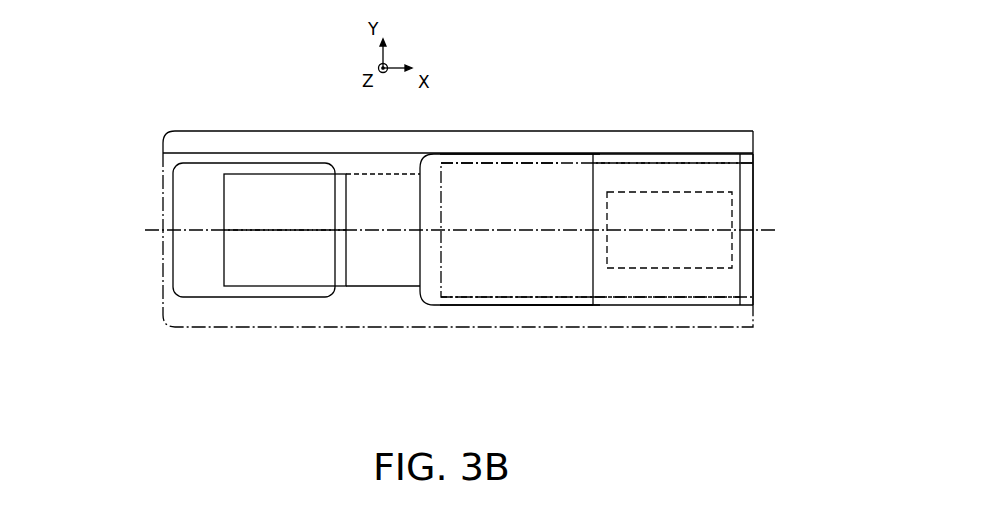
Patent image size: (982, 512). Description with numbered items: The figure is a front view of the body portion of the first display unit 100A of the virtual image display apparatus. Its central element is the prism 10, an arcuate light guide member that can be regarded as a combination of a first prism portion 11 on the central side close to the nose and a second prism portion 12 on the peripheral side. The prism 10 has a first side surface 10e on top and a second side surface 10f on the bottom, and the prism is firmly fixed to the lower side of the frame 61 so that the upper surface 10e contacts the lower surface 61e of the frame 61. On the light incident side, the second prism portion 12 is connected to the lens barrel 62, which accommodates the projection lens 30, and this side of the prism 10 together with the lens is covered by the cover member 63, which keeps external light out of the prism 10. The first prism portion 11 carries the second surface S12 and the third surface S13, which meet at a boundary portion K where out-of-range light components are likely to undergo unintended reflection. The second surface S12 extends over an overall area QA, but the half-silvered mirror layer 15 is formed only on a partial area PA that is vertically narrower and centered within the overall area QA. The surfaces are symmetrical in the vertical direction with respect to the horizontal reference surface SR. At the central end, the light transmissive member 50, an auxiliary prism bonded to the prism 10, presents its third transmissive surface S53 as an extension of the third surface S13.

The first display unit 100A is at (172, 85).
The cover member 63 is at (277, 327).
The lens barrel 62 is at (240, 185).
The projection lens 30 is at (285, 183).
The reference surface SR is at (310, 230).
The second prism portion 12 is at (340, 273).
The prism 10 is at (468, 192).
The first side surface 10e is at (502, 154).
The second side surface 10f is at (572, 305).
The frame 61 is at (587, 150).
The lower surface 61e is at (540, 158).
The boundary portion K is at (596, 285).
The second surface S12 is at (628, 190).
The half-silvered mirror layer 15 is at (671, 192).
The partial area PA is at (669, 235).
The third surface S13 is at (491, 283).
The first prism portion 11 is at (540, 283).
The overall area QA is at (652, 285).
The light transmissive member 50 is at (747, 305).
The third transmissive surface S53 is at (728, 170).